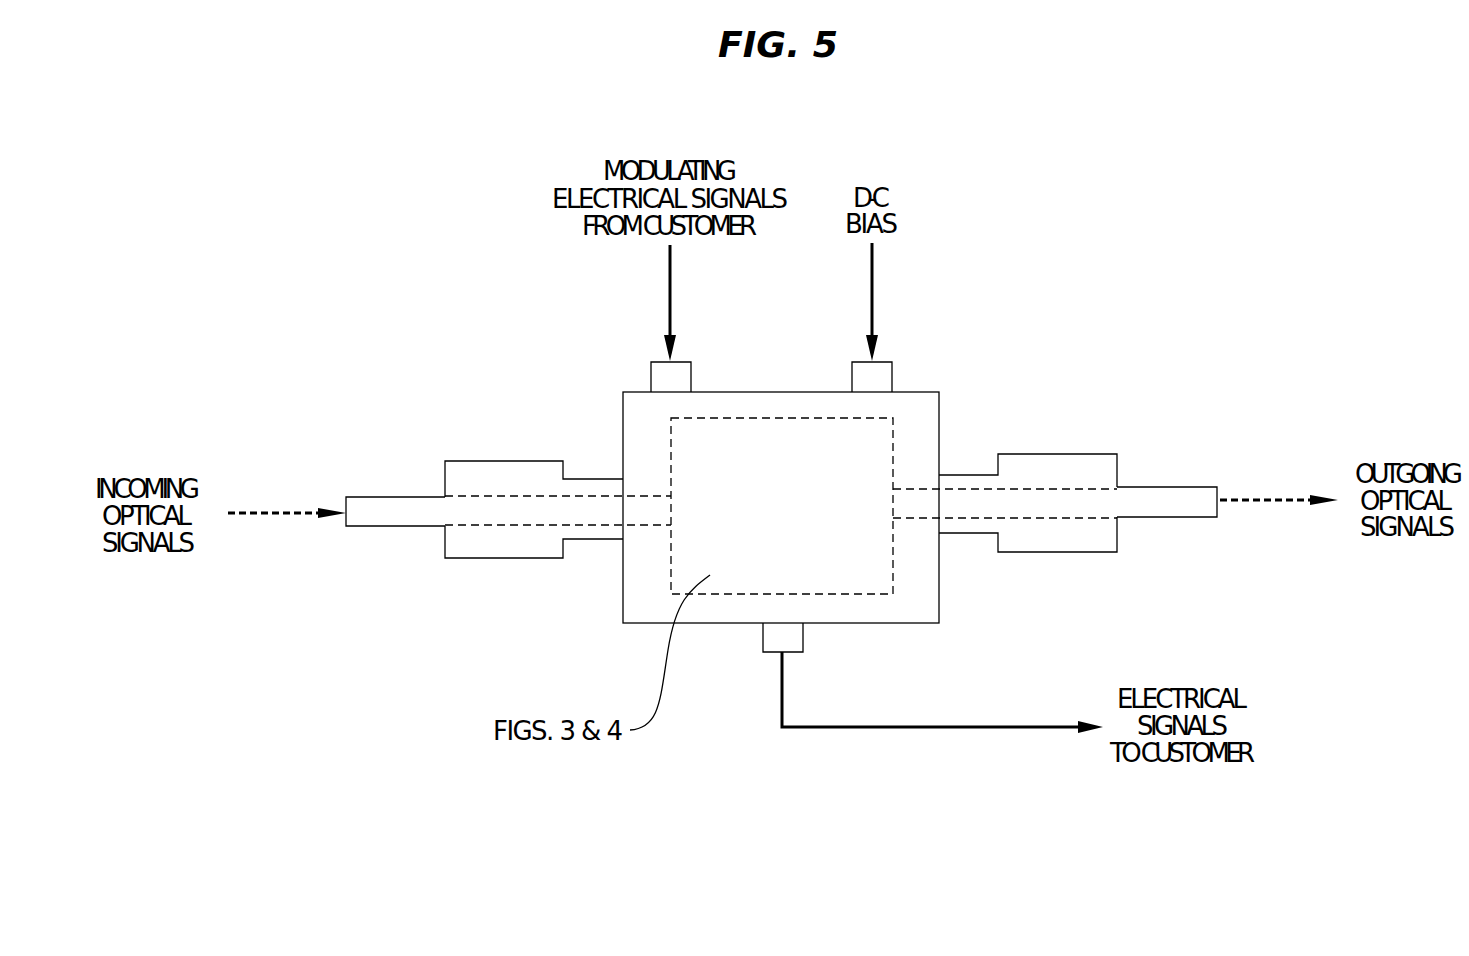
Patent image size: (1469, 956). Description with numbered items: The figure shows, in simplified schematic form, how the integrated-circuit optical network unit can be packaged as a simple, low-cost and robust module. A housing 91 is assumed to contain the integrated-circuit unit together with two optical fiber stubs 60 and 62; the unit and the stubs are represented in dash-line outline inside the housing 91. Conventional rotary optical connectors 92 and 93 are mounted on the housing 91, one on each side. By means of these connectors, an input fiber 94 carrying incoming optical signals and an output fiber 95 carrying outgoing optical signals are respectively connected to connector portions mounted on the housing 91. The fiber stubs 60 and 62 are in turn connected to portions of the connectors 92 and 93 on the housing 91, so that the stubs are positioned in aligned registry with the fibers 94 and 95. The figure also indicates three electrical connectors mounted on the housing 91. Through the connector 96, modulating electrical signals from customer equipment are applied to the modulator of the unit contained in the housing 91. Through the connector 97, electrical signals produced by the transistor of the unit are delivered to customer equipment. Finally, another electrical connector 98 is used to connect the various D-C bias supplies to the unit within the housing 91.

The optical fiber stub 60 is at (654, 493).
The optical fiber stub 62 is at (918, 491).
The housing 91 is at (623, 597).
The rotary optical connector 92 is at (494, 476).
The rotary optical connector 93 is at (1071, 453).
The input fiber 94 is at (380, 517).
The output fiber 95 is at (1168, 498).
The electrical connector 96 is at (662, 378).
The electrical connector 97 is at (793, 638).
The electrical connector 98 is at (885, 369).